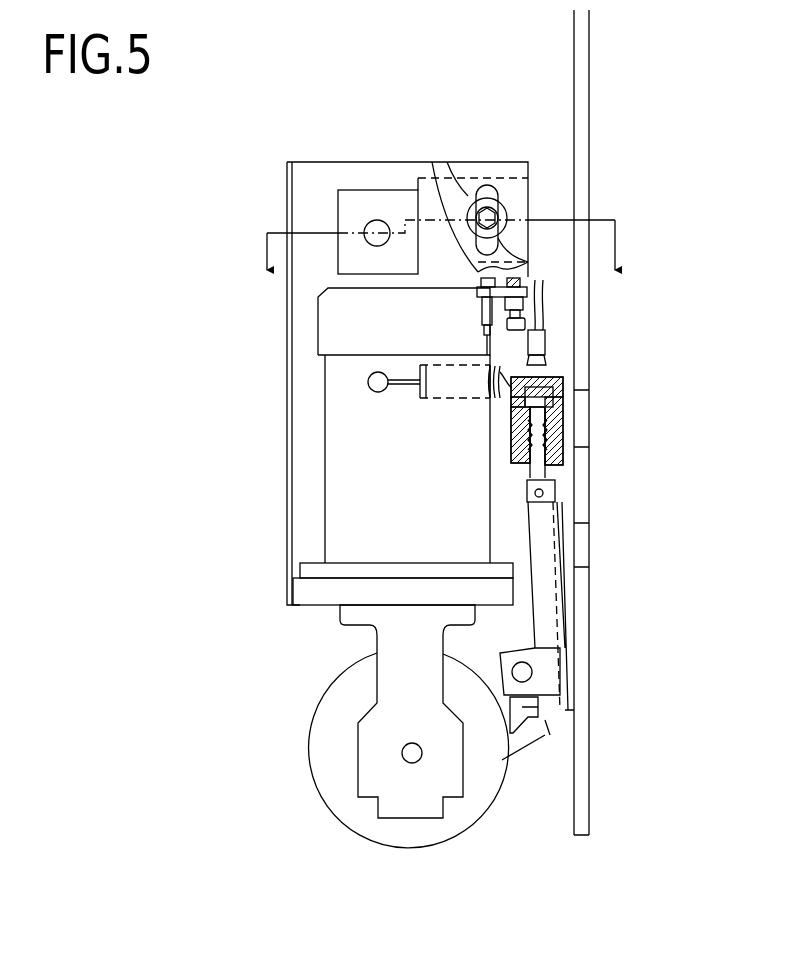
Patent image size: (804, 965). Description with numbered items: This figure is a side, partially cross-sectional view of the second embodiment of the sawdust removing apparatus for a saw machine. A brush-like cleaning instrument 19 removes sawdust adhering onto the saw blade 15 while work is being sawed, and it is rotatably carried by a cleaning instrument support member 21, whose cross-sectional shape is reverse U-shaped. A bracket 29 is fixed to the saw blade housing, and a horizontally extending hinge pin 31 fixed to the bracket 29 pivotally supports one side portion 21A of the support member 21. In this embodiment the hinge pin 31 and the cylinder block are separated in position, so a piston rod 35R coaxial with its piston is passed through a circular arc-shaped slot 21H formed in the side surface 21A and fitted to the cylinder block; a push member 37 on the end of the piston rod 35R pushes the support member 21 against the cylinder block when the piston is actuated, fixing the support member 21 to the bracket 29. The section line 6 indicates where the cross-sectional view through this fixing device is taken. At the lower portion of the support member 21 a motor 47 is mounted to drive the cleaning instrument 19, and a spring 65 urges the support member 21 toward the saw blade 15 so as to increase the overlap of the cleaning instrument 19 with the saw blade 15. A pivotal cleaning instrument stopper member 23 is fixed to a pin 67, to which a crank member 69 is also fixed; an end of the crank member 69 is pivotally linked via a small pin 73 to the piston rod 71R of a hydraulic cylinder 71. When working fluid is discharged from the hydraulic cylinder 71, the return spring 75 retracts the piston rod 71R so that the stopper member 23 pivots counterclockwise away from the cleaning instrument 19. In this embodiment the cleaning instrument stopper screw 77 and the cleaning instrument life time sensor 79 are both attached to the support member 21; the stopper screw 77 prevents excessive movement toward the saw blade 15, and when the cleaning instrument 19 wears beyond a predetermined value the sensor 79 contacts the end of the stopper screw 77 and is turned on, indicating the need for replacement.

The section line 6- 6 is at (437, 251).
The saw blade 15 is at (530, 750).
The cleaning instrument 19 is at (315, 782).
The cleaning instrument support member 21 is at (288, 520).
The one side portion of cleaning instrument support member 21A is at (520, 207).
The circular arc-shaped slot 21H is at (489, 190).
The pivotal cleaning instrument stopper member 23 is at (550, 712).
The bracket 29 is at (589, 104).
The hinge pin 31 is at (377, 220).
The piston rod 35R is at (505, 195).
The push member 37 is at (453, 190).
The motor 47 is at (343, 448).
The spring 65 is at (418, 400).
The pin 67 is at (522, 672).
The crank member 69 is at (553, 582).
The hydraulic cylinder 71 is at (562, 405).
The piston rod 71R is at (540, 473).
The small pin 73 is at (552, 492).
The return spring 75 is at (510, 442).
The cleaning instrument stopper screw 77 is at (545, 326).
The cleaning instrument life time sensor 79 is at (480, 278).